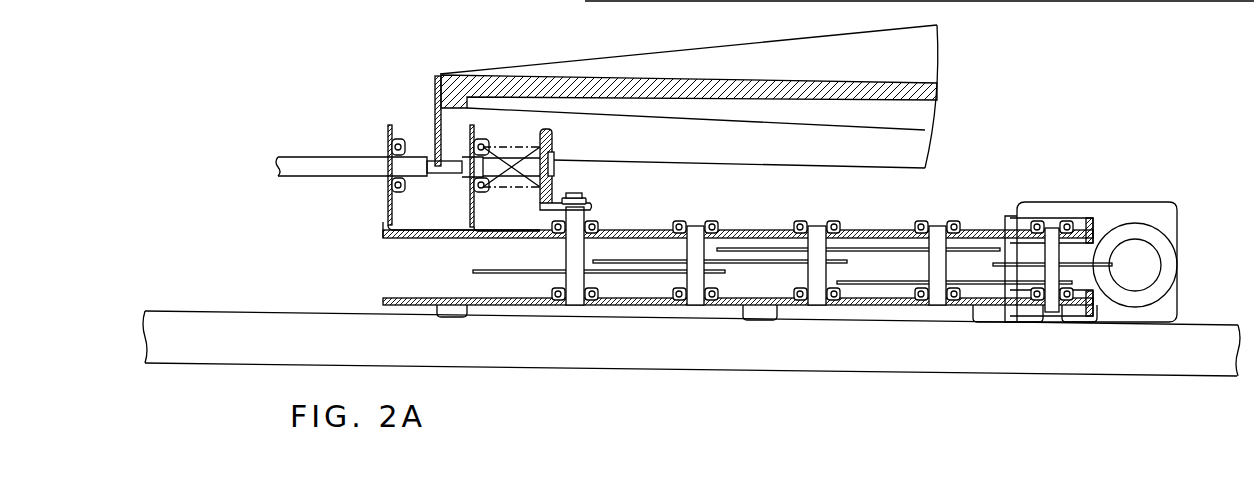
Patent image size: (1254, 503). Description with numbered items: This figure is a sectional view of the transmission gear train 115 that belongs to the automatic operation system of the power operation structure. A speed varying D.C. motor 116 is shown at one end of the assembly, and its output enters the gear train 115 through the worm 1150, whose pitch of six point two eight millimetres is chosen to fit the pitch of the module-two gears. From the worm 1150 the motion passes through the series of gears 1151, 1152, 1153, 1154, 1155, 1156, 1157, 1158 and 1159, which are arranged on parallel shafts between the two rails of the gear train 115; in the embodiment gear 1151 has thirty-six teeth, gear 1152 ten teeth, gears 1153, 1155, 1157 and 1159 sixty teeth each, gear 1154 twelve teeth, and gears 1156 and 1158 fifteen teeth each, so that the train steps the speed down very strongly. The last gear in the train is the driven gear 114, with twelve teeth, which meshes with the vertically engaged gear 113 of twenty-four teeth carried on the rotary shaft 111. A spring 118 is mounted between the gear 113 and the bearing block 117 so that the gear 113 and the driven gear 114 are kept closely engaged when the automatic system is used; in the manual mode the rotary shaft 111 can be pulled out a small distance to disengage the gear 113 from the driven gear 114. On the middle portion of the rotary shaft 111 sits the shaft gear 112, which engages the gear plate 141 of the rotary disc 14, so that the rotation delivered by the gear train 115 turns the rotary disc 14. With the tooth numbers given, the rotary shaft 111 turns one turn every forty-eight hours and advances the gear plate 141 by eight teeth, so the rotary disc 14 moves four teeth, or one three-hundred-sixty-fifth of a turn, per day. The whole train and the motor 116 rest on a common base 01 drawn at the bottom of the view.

The base plate 01 is at (814, 0).
The rotary disc 14 is at (487, 73).
The gear plate 141 is at (435, 94).
The rotary shaft 111 is at (337, 167).
The shaft gear 112 is at (443, 174).
The vertically engaged gear 113 is at (544, 140).
The driven gear 114 is at (588, 207).
The transmission gear train 115 is at (585, 0).
The D.C. motor 116 is at (1150, 233).
The bearing block 117 is at (474, 140).
The spring 118 is at (517, 148).
The worm 1150 is at (1155, 272).
The gear 1151 is at (1000, 262).
The gear 1152 is at (1043, 285).
The gear 1153 is at (978, 284).
The gear 1154 is at (928, 252).
The gear 1155 is at (857, 251).
The gear 1156 is at (810, 262).
The gear 1157 is at (762, 265).
The gear 1158 is at (684, 298).
The gear 1159 is at (638, 277).